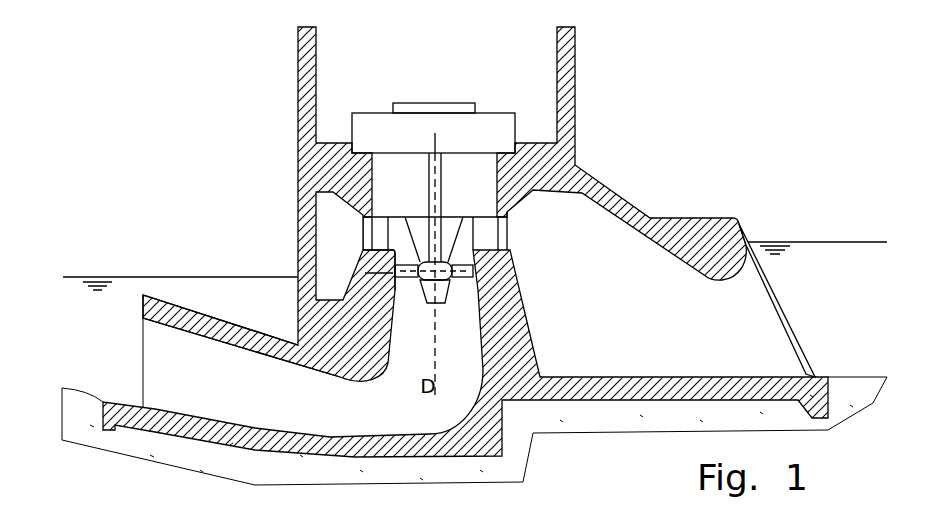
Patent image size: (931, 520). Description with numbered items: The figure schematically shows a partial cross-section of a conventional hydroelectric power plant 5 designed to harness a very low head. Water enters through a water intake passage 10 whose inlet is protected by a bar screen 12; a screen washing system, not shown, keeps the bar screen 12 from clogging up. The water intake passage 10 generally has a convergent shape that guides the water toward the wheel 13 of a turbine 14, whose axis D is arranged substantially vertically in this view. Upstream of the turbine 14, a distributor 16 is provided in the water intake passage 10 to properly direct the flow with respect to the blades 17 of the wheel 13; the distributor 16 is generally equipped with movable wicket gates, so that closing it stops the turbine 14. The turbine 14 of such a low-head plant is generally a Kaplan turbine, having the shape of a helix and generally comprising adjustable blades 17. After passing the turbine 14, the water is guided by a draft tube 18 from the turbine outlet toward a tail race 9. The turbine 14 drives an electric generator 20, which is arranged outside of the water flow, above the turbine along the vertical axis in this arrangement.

The hydroelectric power plant 5 is at (395, 72).
The tail race 9 is at (83, 353).
The water intake passage 10 is at (593, 290).
The bar screen 12 is at (777, 313).
The wheel 13 is at (428, 222).
The turbine 14 is at (457, 291).
The distributor 16 is at (383, 234).
The blades 17 is at (387, 292).
The draft tube 18 is at (173, 347).
The electric generator 20 is at (483, 140).